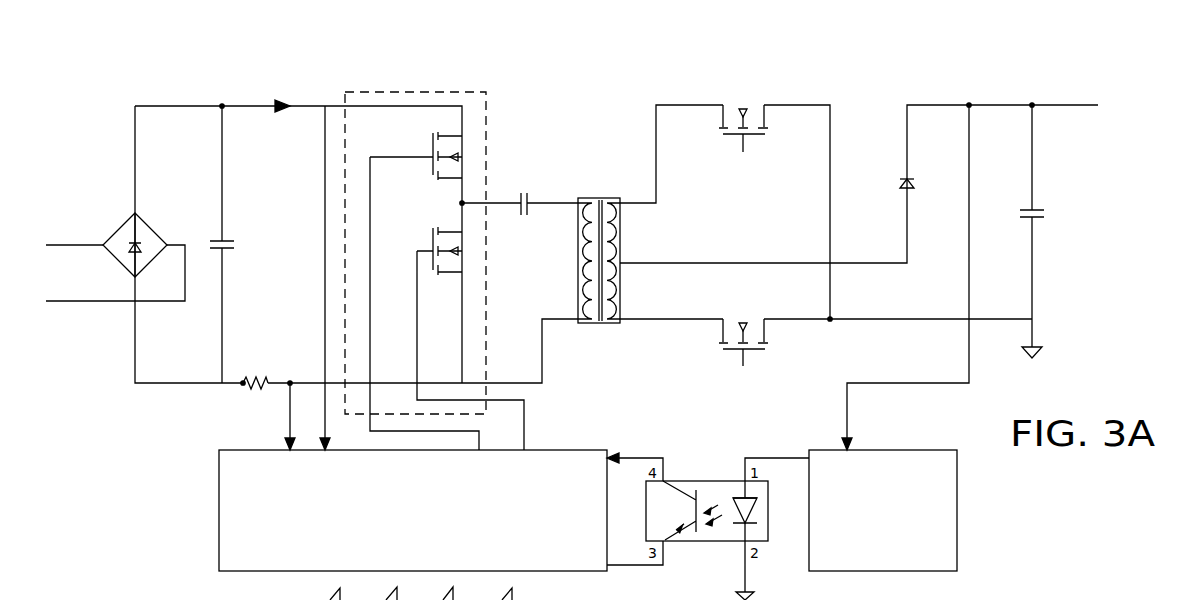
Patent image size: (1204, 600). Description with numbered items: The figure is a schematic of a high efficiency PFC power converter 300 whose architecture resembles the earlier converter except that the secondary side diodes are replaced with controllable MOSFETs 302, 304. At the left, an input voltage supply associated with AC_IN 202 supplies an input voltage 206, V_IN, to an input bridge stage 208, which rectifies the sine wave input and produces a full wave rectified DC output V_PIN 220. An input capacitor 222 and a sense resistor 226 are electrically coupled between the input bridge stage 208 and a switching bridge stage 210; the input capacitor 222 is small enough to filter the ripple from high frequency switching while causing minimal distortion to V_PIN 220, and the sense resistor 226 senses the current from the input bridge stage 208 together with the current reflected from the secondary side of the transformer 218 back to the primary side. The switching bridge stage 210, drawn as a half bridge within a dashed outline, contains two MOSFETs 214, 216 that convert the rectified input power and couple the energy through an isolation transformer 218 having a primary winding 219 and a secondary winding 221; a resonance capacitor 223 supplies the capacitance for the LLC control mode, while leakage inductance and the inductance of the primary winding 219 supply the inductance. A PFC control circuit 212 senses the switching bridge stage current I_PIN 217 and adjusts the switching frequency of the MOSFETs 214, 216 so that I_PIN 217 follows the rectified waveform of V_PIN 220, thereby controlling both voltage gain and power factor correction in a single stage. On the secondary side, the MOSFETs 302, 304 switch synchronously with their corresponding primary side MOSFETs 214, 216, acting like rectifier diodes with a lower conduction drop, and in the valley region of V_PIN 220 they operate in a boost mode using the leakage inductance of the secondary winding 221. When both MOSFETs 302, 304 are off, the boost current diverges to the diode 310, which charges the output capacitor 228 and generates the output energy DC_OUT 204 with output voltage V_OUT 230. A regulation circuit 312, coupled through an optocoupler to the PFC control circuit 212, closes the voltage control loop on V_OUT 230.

The PFC power converter 300 is at (82, 150).
The AC input 202 is at (72, 288).
The DC output 204 is at (1122, 204).
The input voltage 206 is at (58, 211).
The input bridge stage 208 is at (146, 222).
The switching bridge stage 210 is at (486, 97).
The PFC control circuit 212 is at (413, 510).
The MOSFET 214 is at (434, 140).
The MOSFET 216 is at (434, 234).
The switching bridge stage current 217 is at (242, 92).
The isolation transformer 218 is at (599, 249).
The primary winding 219 is at (584, 293).
The rectified input bridge stage voltage 220 is at (160, 92).
The secondary winding 221 is at (616, 302).
The input capacitor 222 is at (233, 248).
The resonance capacitor 223 is at (530, 198).
The sense resistor 226 is at (258, 380).
The output capacitor 228 is at (1039, 211).
The output voltage 230 is at (1114, 100).
The secondary side MOSFET 302 is at (762, 136).
The secondary side MOSFET 304 is at (762, 351).
The diode 310 is at (903, 180).
The regulation circuit 312 is at (883, 510).